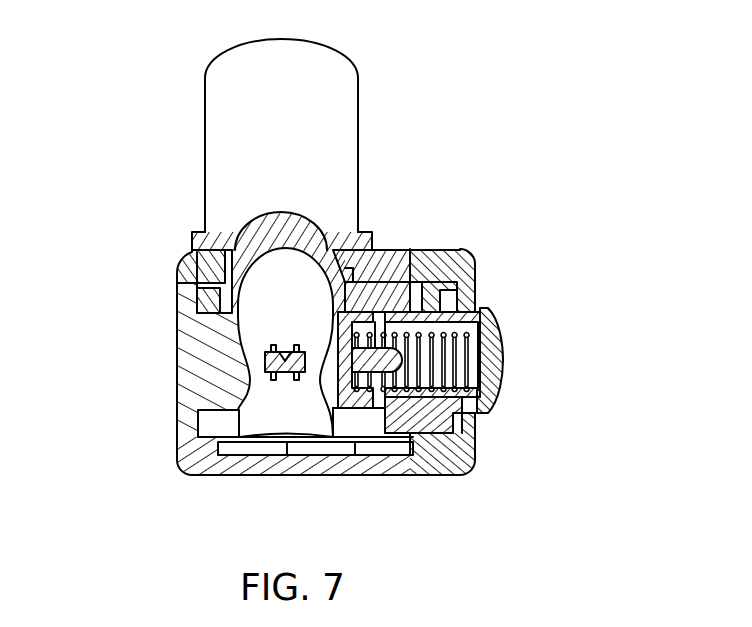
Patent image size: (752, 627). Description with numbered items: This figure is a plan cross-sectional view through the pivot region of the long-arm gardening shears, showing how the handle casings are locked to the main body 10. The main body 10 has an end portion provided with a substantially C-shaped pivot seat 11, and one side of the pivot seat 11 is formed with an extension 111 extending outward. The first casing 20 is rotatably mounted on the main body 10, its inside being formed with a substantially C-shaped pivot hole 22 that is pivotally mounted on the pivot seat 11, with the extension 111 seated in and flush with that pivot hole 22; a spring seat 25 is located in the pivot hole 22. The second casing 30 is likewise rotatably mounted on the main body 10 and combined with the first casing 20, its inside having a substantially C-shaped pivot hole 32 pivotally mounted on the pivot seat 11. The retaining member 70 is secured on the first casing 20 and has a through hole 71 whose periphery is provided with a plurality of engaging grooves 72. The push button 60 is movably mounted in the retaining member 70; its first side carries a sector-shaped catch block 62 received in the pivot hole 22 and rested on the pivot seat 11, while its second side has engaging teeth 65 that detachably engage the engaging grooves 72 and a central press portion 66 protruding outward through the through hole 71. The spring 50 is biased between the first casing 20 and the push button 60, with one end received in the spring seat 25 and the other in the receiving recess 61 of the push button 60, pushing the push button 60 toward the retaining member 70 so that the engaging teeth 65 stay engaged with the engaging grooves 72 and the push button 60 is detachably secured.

The main body 10 is at (355, 186).
The pivot seat 11 is at (182, 278).
The extension 111 is at (414, 288).
The first casing 20 is at (354, 478).
The pivot hole 22 is at (363, 420).
The spring seat 25 is at (360, 397).
The second casing 30 is at (177, 337).
The pivot hole 32 is at (215, 420).
The spring 50 is at (488, 361).
The push button 60 is at (507, 336).
The receiving recess 61 is at (478, 390).
The catch block 62 is at (403, 470).
The engaging teeth 65 is at (477, 300).
The press portion 66 is at (502, 377).
The retaining member 70 is at (478, 252).
The through hole 71 is at (483, 417).
The engaging grooves 72 is at (499, 236).